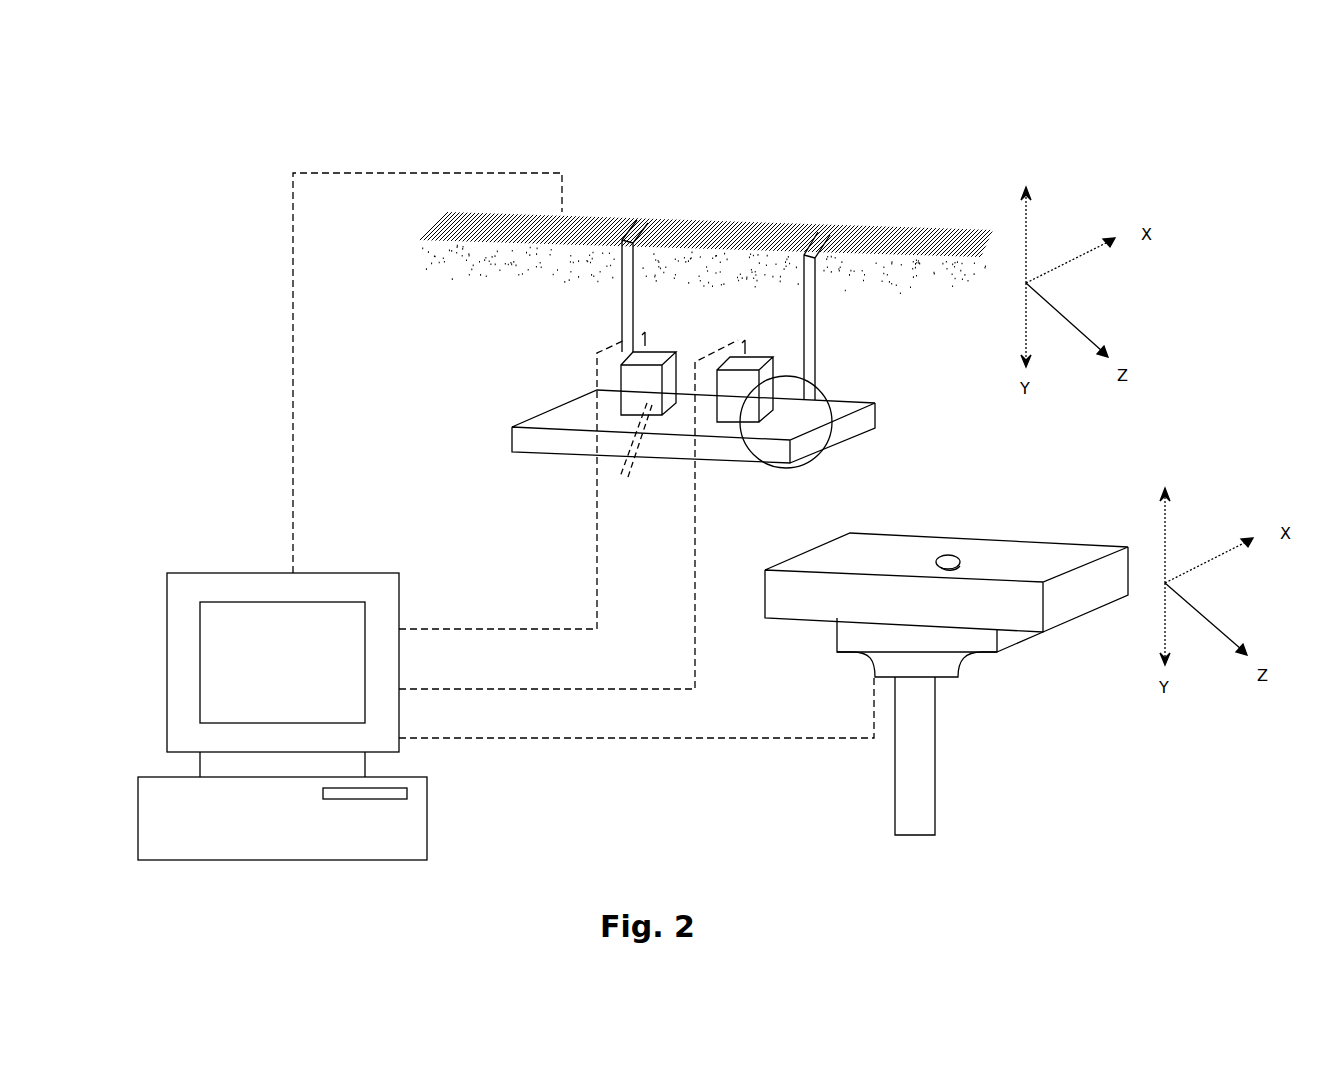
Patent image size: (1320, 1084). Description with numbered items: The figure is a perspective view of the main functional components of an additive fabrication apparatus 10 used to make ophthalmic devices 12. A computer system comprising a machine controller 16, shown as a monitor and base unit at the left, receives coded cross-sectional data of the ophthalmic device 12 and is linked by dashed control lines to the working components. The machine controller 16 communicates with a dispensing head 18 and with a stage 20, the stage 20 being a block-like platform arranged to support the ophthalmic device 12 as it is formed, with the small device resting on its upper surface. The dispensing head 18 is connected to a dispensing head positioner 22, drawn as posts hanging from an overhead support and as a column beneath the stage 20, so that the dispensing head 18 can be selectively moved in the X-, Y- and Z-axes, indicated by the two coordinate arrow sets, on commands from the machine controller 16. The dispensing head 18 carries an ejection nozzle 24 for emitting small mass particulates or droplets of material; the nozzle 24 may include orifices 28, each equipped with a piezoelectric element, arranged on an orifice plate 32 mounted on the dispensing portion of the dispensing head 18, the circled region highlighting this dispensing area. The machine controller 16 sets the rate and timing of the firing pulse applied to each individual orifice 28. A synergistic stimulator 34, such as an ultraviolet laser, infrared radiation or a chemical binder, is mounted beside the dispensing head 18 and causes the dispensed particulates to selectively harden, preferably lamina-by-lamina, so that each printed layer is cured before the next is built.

The additive fabrication apparatus 10 is at (177, 122).
The ophthalmic device 12 is at (950, 556).
The machine controller 16 is at (167, 662).
The dispensing head 18 is at (768, 339).
The stage 20 is at (1055, 595).
The dispensing head positioner 22 is at (718, 232).
The ejection nozzle 24 is at (842, 401).
The orifices 28 is at (770, 462).
The orifice plate 32 is at (832, 444).
The synergistic stimulator 34 is at (673, 353).